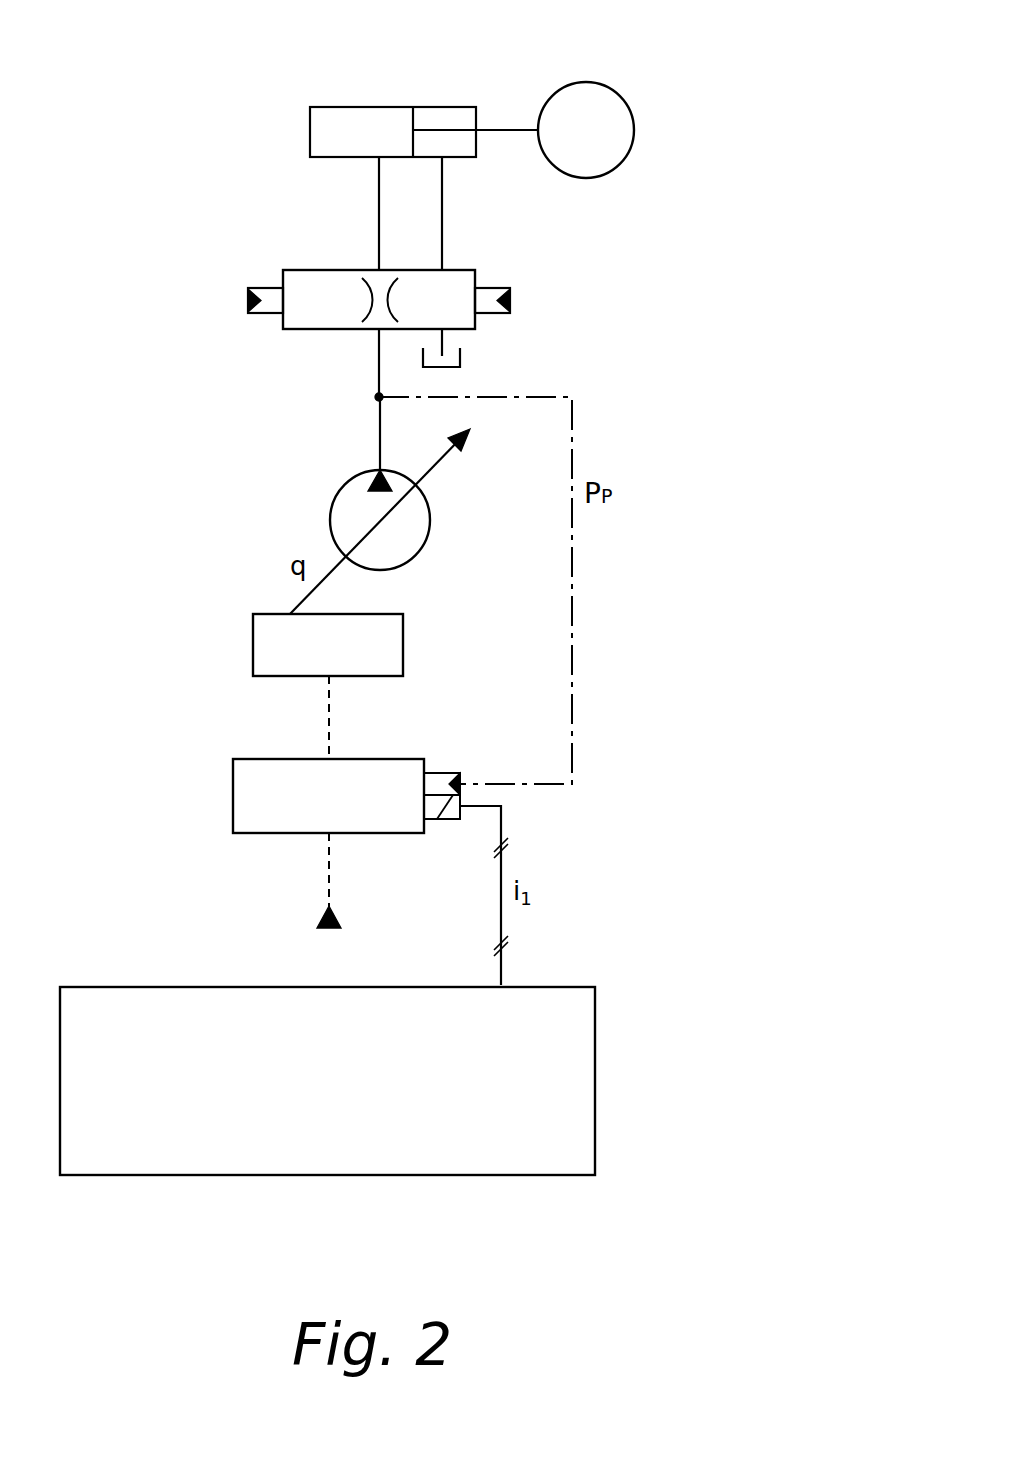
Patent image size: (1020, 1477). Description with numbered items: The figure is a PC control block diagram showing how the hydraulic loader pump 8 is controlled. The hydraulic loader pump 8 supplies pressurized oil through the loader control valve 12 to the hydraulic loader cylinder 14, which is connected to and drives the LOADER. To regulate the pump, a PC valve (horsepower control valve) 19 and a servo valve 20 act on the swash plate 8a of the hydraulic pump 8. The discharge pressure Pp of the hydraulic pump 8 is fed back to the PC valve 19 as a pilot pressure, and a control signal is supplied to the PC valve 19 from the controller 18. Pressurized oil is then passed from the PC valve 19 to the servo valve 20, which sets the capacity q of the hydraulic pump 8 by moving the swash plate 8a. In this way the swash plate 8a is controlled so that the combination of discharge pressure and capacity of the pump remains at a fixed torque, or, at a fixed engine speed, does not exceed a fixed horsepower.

The hydraulic loader cylinder 14 is at (345, 107).
The loader LOADER is at (634, 112).
The loader control valve 12 is at (460, 270).
The hydraulic loader pump 8 is at (330, 508).
The swash plate 8a is at (440, 455).
The servo valve 20 is at (403, 640).
The PC valve (horsepower control valve) 19 is at (407, 759).
The controller 18 is at (577, 987).